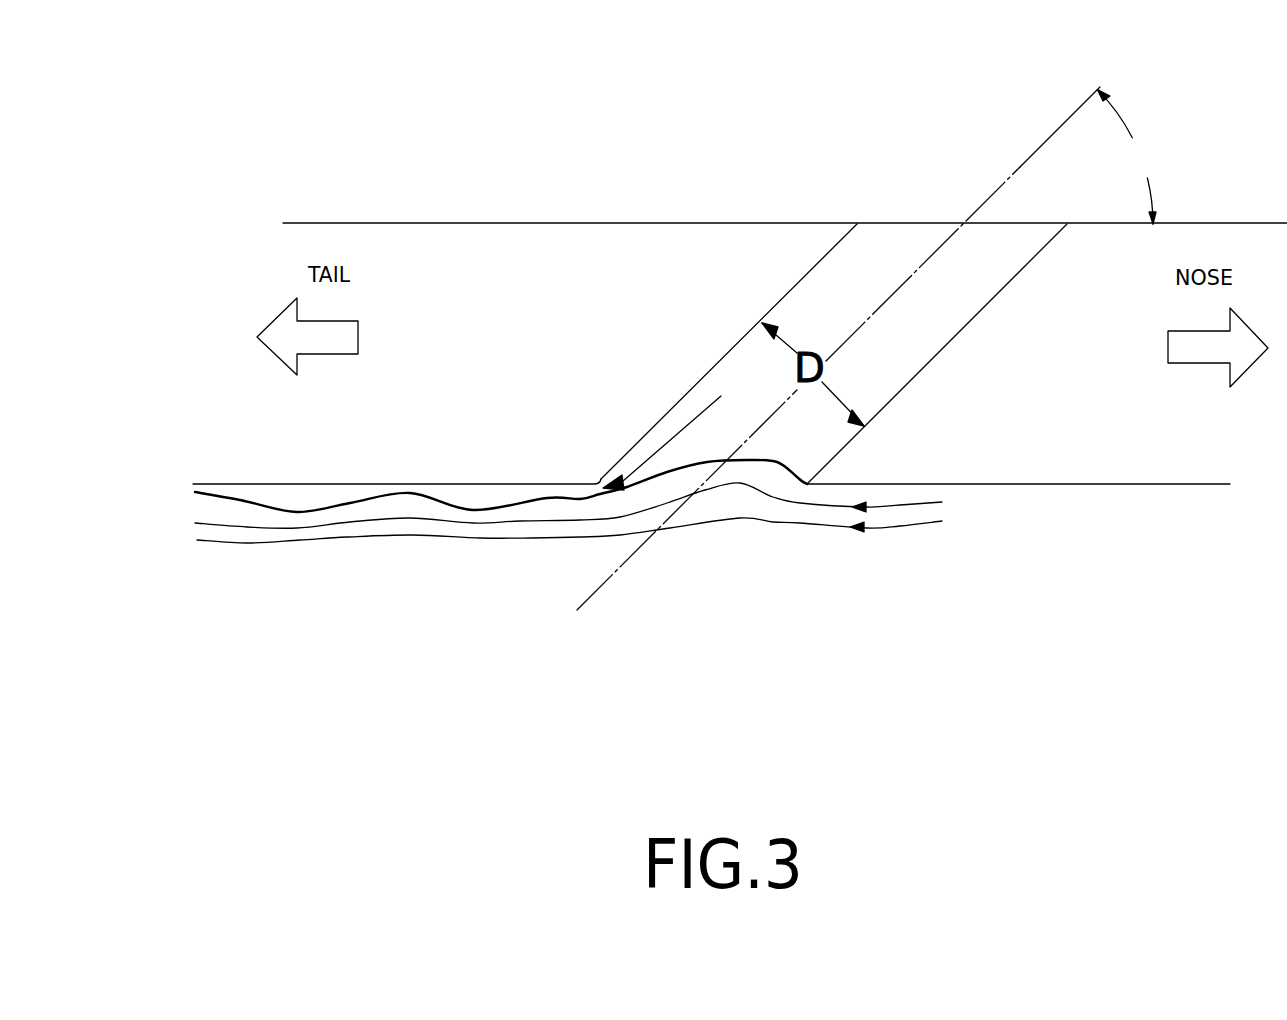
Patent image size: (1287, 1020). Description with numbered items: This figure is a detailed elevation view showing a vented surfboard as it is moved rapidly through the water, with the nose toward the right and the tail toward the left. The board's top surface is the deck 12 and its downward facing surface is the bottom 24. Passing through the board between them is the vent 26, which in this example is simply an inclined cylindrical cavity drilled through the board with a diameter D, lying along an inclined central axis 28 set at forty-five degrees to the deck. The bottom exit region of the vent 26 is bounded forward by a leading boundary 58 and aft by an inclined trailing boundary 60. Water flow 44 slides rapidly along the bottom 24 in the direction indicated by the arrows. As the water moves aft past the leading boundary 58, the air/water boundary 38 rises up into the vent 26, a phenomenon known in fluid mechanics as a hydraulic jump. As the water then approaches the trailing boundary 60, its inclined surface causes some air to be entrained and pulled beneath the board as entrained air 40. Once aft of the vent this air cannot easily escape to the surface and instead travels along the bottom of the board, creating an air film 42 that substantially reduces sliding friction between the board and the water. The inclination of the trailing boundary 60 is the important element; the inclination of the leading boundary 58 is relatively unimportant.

The deck 12 is at (785, 144).
The bottom 24 is at (711, 564).
The vent 26 is at (873, 274).
The central axis 28 is at (867, 337).
The air/water boundary 38 is at (484, 555).
The entrained air 40 is at (580, 273).
The air film 42 is at (442, 570).
The water flow 44 is at (632, 566).
The leading boundary 58 is at (865, 563).
The trailing boundary 60 is at (583, 277).